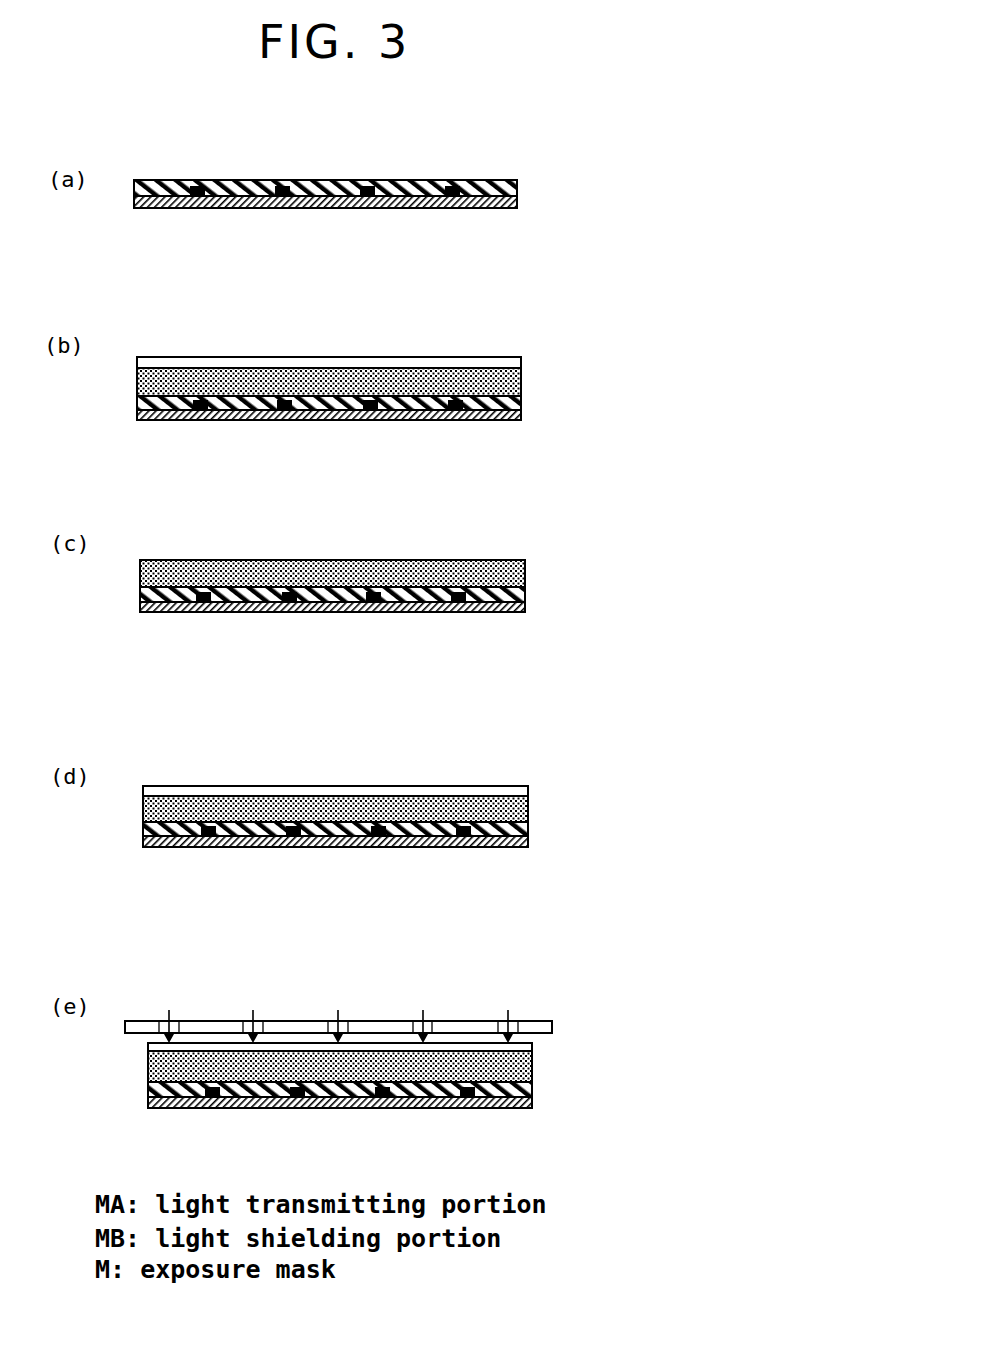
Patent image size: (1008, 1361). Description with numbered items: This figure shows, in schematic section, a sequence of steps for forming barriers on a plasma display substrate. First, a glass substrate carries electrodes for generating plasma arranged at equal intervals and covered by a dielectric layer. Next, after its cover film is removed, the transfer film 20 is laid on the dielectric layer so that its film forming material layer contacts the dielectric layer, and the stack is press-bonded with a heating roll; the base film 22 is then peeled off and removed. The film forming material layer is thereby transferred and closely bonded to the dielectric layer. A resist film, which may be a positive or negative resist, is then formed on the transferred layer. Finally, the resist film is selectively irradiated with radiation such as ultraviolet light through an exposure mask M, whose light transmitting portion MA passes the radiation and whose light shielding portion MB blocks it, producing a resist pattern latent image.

The transfer film 20 is at (499, 386).
The base film 22 is at (295, 362).
The light transmitting portion MA is at (172, 1022).
The light shielding portion MB is at (362, 1024).
The exposure mask M is at (338, 992).